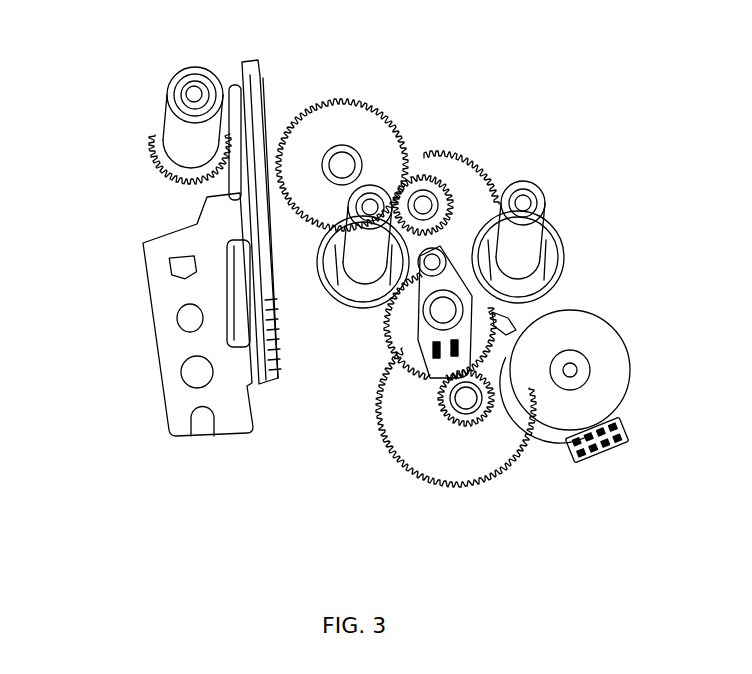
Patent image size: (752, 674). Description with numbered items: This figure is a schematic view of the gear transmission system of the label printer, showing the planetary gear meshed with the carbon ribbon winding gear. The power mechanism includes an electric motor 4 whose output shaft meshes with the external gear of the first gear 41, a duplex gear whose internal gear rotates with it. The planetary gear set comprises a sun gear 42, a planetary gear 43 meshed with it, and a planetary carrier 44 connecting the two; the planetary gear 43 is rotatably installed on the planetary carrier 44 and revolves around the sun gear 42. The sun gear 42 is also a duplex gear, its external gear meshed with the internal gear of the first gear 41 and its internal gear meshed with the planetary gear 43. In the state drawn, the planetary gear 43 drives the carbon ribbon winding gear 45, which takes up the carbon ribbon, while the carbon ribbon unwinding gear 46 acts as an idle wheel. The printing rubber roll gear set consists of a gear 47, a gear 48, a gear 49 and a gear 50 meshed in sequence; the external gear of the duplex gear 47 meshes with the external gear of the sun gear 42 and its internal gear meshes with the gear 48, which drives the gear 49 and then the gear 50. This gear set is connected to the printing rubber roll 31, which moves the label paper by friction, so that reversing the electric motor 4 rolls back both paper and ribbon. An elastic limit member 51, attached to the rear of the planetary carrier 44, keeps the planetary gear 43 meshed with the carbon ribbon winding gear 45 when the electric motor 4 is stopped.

The electric motor 4 is at (603, 387).
The printing rubber roll 31 is at (170, 130).
The first gear 41 is at (473, 453).
The sun gear 42 is at (396, 357).
The planetary gear 43 is at (436, 273).
The planetary carrier 44 is at (432, 377).
The carbon ribbon winding gear 45 is at (350, 278).
The carbon ribbon unwinding gear 46 is at (547, 260).
The gear 47 is at (480, 177).
The gear 48 is at (385, 145).
The gear 49 is at (272, 220).
The gear 50 is at (152, 139).
The elastic limit member 51 is at (500, 323).